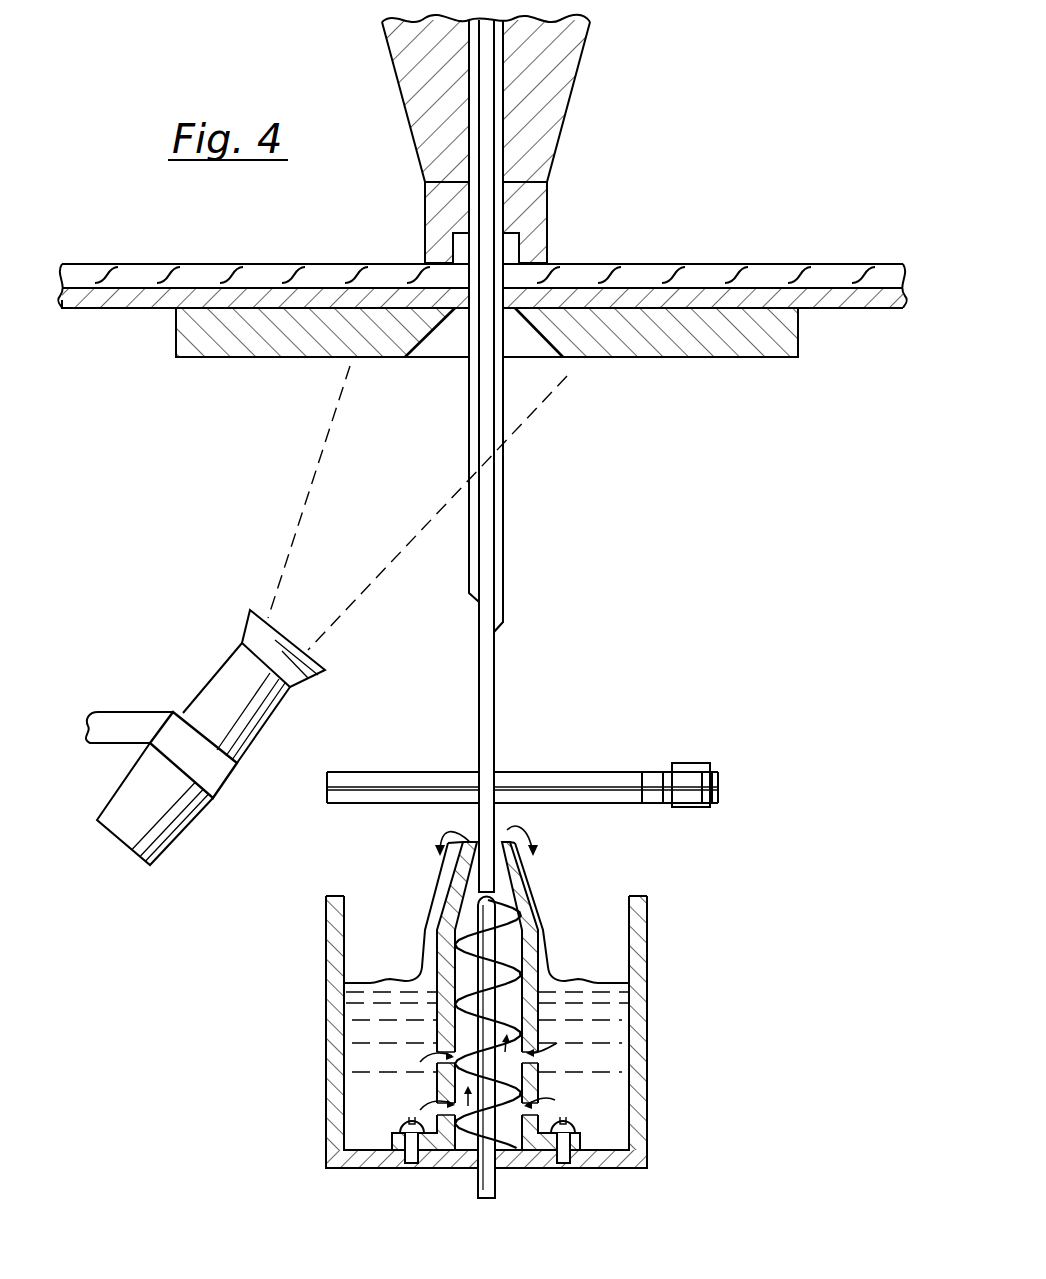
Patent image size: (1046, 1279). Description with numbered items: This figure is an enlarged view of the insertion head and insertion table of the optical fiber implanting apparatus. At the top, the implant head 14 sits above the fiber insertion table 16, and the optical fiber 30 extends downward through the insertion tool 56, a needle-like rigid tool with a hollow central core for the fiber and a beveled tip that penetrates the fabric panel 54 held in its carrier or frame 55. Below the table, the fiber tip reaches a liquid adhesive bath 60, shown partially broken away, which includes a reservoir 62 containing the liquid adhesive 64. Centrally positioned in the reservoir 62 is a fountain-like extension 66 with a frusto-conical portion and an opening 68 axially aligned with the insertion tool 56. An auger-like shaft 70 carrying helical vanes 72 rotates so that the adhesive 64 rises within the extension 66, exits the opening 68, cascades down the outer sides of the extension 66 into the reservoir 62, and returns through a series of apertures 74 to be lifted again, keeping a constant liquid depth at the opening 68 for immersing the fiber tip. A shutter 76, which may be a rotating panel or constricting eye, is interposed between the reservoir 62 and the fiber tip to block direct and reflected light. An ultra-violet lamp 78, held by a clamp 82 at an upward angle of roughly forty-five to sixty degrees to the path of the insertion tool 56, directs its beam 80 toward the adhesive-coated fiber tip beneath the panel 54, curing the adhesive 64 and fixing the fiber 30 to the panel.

The implant head 14 is at (575, 72).
The fiber insertion table 16 is at (673, 352).
The optical fiber 30 is at (492, 805).
The fabric panel 54 is at (843, 263).
The carrier or frame 55 is at (147, 312).
The insertion tool 56 is at (503, 531).
The liquid adhesive bath 60 is at (285, 1009).
The reservoir 62 is at (647, 950).
The liquid adhesive 64 is at (353, 1058).
The fountain-like extension 66 is at (557, 1002).
The opening 68 is at (473, 842).
The auger-like shaft 70 is at (497, 1187).
The helical vanes 72 is at (463, 945).
The apertures 74 is at (542, 1098).
The shutter 76 is at (583, 773).
The ultra-violet lamp 78 is at (228, 672).
The beam 80 is at (317, 503).
The clamp 82 is at (218, 782).